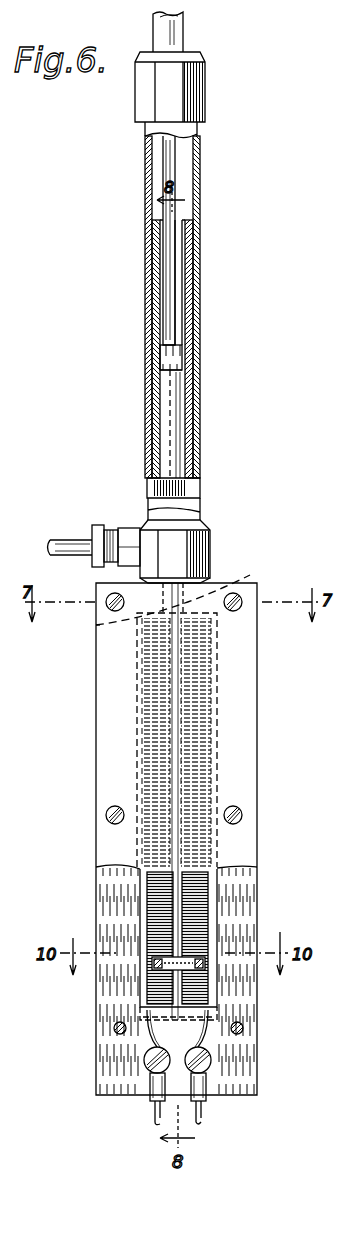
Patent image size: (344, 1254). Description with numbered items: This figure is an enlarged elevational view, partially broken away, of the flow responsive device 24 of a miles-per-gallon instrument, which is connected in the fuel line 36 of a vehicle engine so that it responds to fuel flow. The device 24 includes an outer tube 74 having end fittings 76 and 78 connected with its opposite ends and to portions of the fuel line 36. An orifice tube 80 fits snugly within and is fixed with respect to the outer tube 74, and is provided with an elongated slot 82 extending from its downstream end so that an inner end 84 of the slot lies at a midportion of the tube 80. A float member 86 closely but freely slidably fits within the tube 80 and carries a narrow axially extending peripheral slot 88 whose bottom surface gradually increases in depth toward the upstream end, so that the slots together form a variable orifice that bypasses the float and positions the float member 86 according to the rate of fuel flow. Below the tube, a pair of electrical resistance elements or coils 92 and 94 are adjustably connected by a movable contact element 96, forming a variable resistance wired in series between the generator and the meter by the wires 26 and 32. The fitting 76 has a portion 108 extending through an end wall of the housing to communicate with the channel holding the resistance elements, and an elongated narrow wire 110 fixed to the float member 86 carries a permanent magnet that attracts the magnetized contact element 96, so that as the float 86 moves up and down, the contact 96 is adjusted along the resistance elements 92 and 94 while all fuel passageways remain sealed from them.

The end fitting 78 is at (205, 108).
The tube 74 is at (200, 297).
The orifice tube 80 is at (193, 338).
The slot 82 is at (178, 250).
The inner end 84 is at (166, 325).
The float member 86 is at (168, 430).
The peripheral slot 88 is at (200, 418).
The end fitting 76 is at (208, 550).
The fuel line 36 is at (82, 542).
The resistance element 92 is at (158, 878).
The resistance element 94 is at (210, 888).
The movable contact element 96 is at (199, 952).
The wire 32 is at (155, 1124).
The wire 26 is at (200, 1124).
The wire 110 is at (250, 575).
The portion 108 is at (77, 625).
The device 24 is at (267, 514).